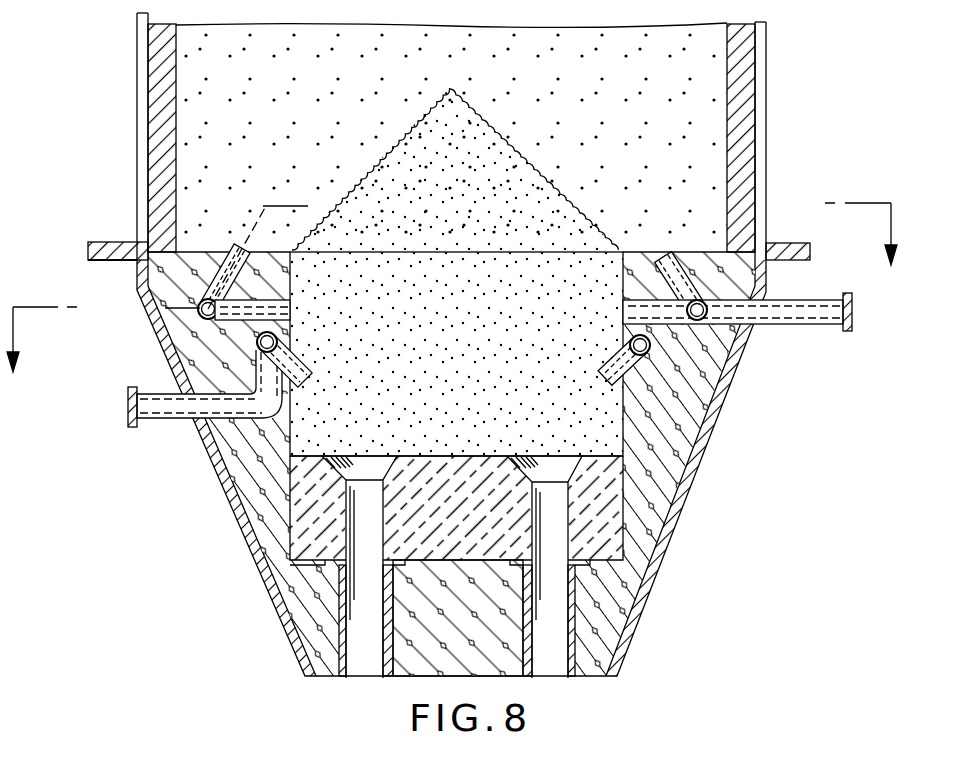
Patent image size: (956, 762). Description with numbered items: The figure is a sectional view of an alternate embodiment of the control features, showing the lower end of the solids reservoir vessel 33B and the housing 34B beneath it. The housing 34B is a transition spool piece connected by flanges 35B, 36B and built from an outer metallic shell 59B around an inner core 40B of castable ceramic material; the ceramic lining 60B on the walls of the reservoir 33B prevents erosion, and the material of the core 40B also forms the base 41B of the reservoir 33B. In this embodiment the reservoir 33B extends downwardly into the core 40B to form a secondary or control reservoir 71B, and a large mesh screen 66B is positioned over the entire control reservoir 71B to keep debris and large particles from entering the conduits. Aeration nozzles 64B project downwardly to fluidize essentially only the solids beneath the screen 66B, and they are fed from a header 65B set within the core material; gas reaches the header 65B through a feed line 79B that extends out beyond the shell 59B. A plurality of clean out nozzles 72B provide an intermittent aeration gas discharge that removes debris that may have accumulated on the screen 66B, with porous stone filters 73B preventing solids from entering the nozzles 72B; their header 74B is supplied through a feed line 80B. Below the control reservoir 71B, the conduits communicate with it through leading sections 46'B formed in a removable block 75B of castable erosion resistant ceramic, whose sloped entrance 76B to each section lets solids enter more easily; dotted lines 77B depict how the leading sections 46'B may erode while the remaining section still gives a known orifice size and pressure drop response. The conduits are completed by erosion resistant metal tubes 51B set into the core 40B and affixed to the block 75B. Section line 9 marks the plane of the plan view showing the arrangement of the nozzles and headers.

The solids reservoir vessel 33B is at (364, 149).
The large mesh screen 66B is at (538, 165).
The ceramic lining 60B is at (153, 104).
The steel shell 59B is at (140, 151).
The flange 35B is at (100, 242).
The flange 36B is at (102, 258).
The inner core 40B is at (250, 488).
The base of the reservoir 41B is at (650, 251).
The housing 34B is at (707, 437).
The control reservoir 71B is at (496, 381).
The block 75B is at (603, 515).
The discharge opening 76B is at (390, 457).
The dotted lines 77B is at (497, 457).
The leading section 46'B is at (571, 610).
The erosion resistant metal tube 51B is at (340, 632).
The clean out nozzle 72B is at (232, 226).
The porous stone filter 73B is at (257, 229).
The feed line 79B is at (158, 418).
The aeration nozzle 64B is at (302, 352).
The header 65B is at (258, 344).
The feed line 80B is at (845, 331).
The header 74B is at (705, 318).
The section line 9- 9 is at (450, 305).